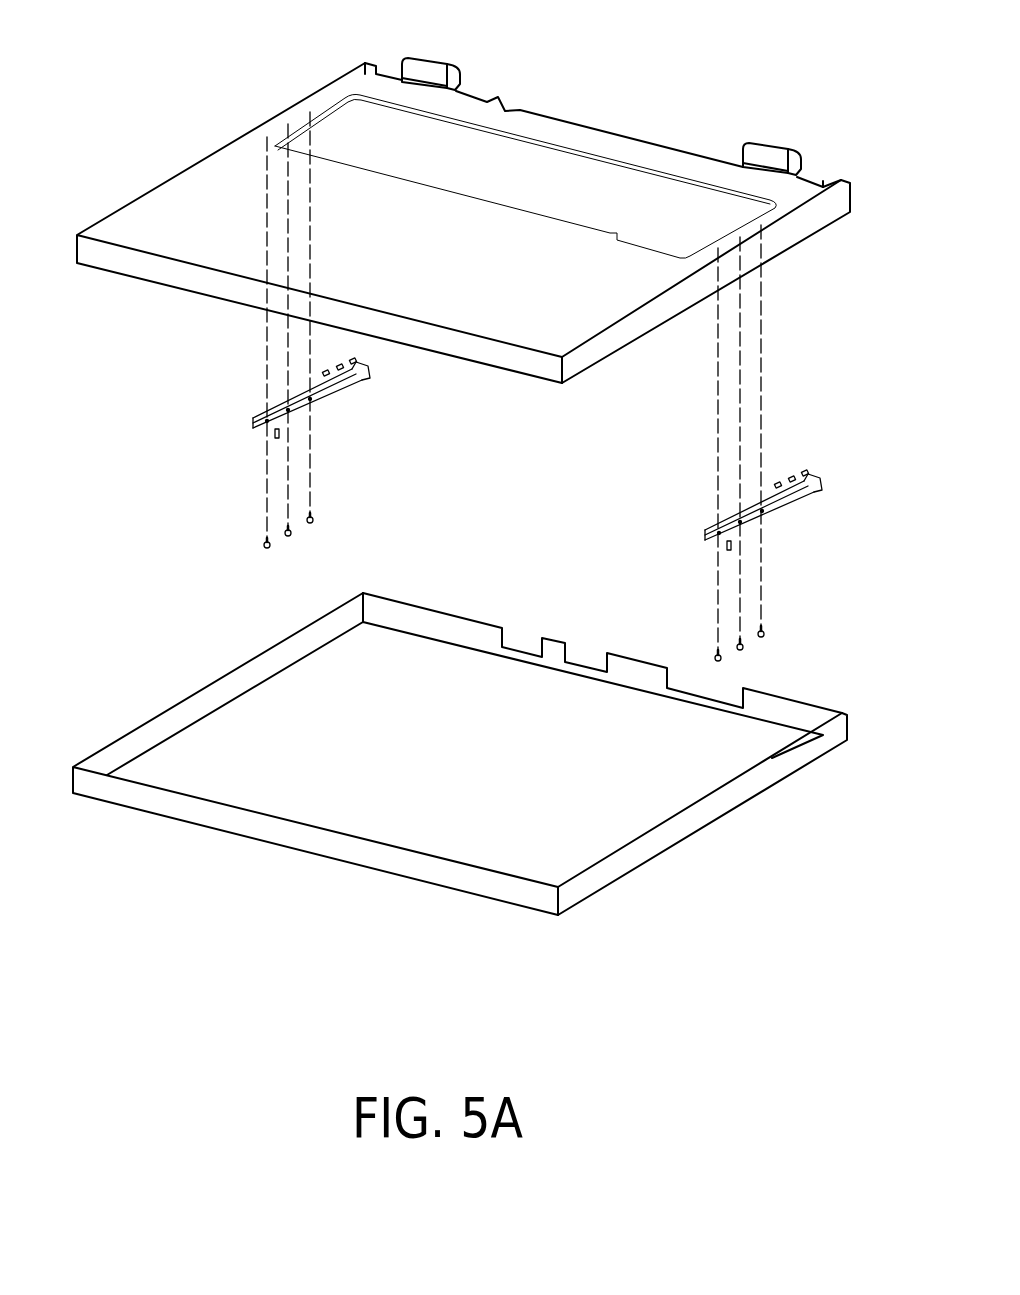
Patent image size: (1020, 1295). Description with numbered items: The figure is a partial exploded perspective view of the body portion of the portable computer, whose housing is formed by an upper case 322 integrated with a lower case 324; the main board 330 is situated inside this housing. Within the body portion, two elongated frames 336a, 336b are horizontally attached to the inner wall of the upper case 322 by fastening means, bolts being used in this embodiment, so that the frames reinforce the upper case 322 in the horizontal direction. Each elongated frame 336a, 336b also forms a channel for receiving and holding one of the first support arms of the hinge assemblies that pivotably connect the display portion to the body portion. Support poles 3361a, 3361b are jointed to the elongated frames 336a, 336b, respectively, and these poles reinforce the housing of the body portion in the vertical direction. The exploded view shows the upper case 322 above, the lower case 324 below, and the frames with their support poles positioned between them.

The main board 330 is at (265, 32).
The upper case 322 is at (816, 220).
The lower case 324 is at (740, 795).
The elongated frame 336a is at (802, 488).
The elongated frame 336b is at (343, 383).
The support pole 3361a is at (737, 548).
The support pole 3361b is at (283, 433).